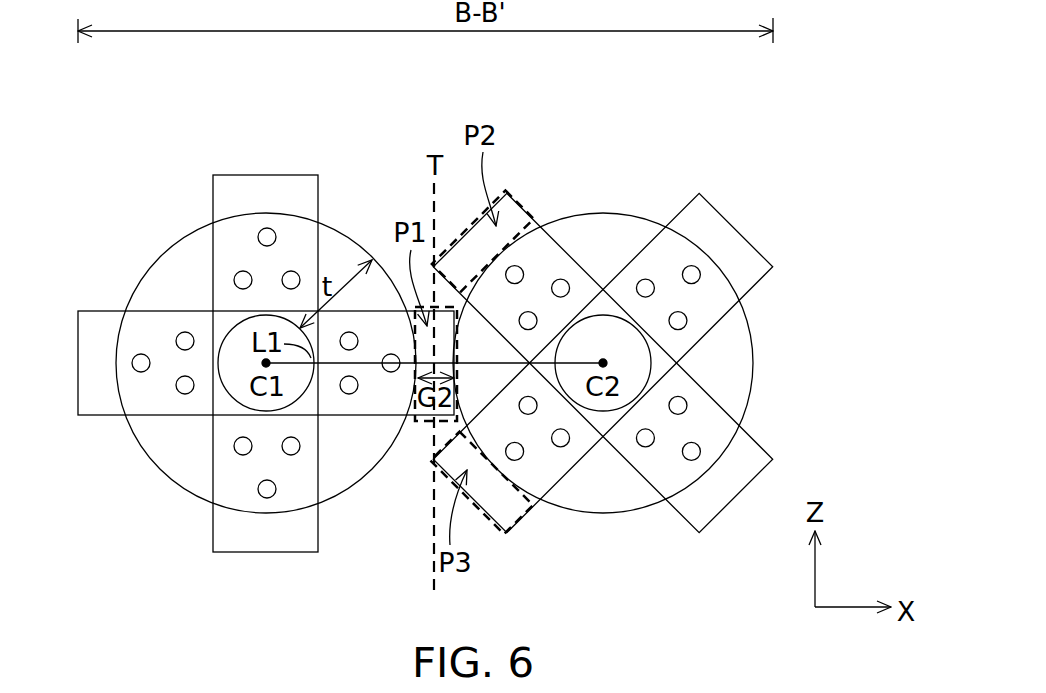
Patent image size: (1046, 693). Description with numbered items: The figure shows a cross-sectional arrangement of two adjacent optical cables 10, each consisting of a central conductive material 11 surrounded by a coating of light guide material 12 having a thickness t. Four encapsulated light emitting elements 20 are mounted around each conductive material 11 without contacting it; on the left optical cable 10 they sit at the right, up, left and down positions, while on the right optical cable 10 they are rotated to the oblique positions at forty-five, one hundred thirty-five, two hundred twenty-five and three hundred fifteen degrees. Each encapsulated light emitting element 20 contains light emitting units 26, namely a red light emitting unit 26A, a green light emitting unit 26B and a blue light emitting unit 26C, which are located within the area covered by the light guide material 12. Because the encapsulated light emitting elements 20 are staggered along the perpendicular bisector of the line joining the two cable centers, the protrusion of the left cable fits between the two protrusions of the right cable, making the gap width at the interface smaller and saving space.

The optical cable 10 is at (342, 178).
The conductive material 11 is at (233, 398).
The light guide material 12 is at (154, 284).
The encapsulated light emitting element 20 is at (97, 370).
The light emitting unit 26 is at (357, 119).
The red light emitting unit 26A is at (267, 228).
The green light emitting unit 26B is at (243, 270).
The blue light emitting unit 26C is at (291, 270).